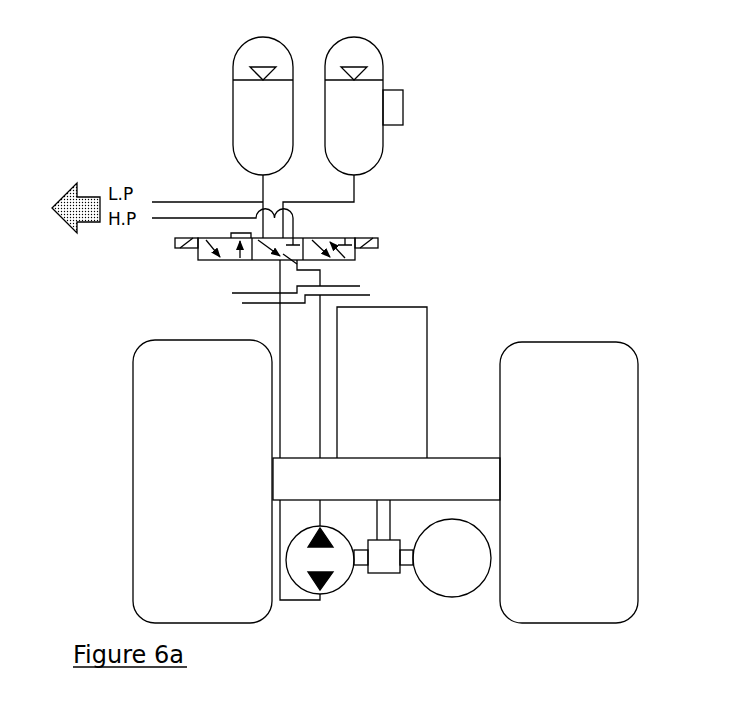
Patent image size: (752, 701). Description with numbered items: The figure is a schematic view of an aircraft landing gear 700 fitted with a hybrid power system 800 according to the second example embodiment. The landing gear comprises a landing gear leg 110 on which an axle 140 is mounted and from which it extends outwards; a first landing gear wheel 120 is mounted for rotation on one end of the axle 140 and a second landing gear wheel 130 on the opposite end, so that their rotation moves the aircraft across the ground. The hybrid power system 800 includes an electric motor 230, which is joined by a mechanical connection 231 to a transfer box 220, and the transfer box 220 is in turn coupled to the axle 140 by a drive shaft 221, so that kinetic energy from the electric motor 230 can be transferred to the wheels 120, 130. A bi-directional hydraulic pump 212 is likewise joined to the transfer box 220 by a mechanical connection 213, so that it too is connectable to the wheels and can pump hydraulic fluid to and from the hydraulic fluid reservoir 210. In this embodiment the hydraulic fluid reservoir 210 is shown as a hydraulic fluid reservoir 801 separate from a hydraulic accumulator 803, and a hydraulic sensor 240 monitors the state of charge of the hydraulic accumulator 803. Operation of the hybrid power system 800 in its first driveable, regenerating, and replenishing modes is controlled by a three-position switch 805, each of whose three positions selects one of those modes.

The aircraft landing gear 700 is at (573, 200).
The hybrid power system 800 is at (150, 135).
The hydraulic fluid reservoir 210 is at (183, 48).
The hydraulic fluid reservoir 801 is at (263, 142).
The hydraulic accumulator 803 is at (367, 143).
The hydraulic sensor 240 is at (393, 103).
The three-position switch 805 is at (192, 245).
The landing gear leg 110 is at (395, 345).
The first landing gear wheel 120 is at (145, 422).
The second landing gear wheel 130 is at (605, 512).
The axle 140 is at (442, 470).
The bi-directional hydraulic pump 212 is at (302, 572).
The mechanical connection 213 is at (362, 565).
The transfer box 220 is at (387, 573).
The drive shaft 221 is at (383, 520).
The mechanical connection 231 is at (410, 565).
The electric motor 230 is at (462, 582).